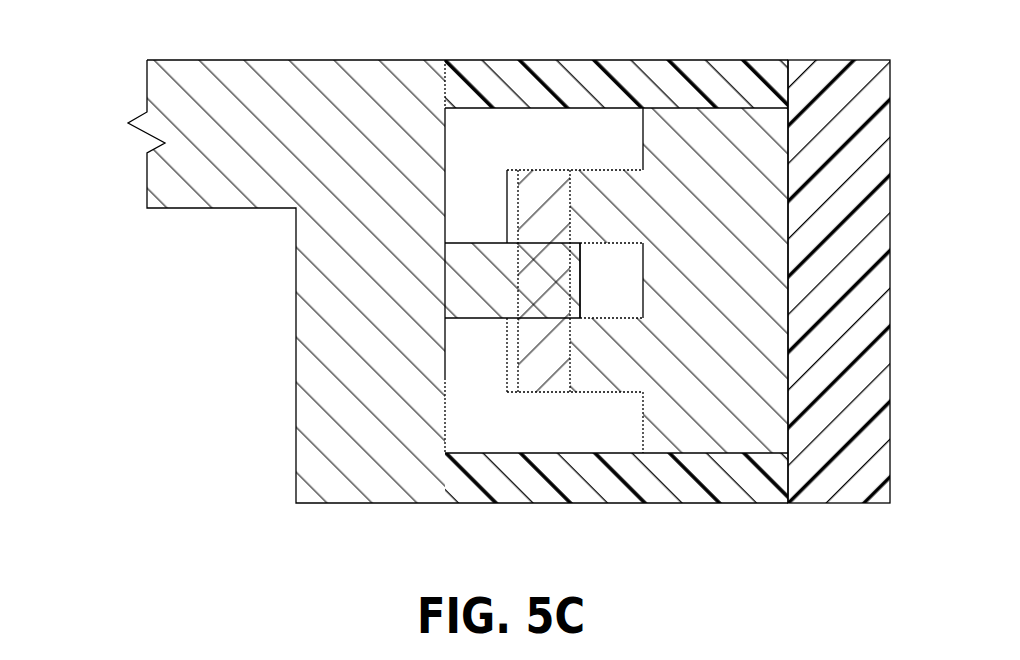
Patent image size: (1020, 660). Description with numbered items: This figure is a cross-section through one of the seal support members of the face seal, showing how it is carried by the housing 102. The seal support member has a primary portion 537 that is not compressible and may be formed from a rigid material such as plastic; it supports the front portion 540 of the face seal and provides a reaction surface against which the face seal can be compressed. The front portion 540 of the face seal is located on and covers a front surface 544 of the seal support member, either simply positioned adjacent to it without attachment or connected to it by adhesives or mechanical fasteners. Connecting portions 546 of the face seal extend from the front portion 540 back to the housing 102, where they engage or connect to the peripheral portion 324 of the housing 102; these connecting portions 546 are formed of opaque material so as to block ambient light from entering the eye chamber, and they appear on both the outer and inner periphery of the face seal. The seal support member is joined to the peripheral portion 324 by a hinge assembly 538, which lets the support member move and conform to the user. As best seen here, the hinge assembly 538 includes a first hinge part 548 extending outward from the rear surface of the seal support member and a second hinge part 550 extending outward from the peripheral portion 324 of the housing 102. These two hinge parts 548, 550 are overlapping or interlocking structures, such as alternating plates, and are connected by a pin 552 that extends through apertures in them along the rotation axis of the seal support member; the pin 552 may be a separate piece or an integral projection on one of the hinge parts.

The housing 102 is at (112, 66).
The peripheral portion 324 is at (445, 82).
The primary portion 537 is at (677, 128).
The hinge assembly 538 is at (514, 149).
The front portion 540 is at (891, 149).
The front surface 544 is at (788, 212).
The connecting portions 546 is at (750, 59).
The first hinge part 548 is at (507, 201).
The second hinge part 550 is at (582, 283).
The pin 552 is at (570, 202).